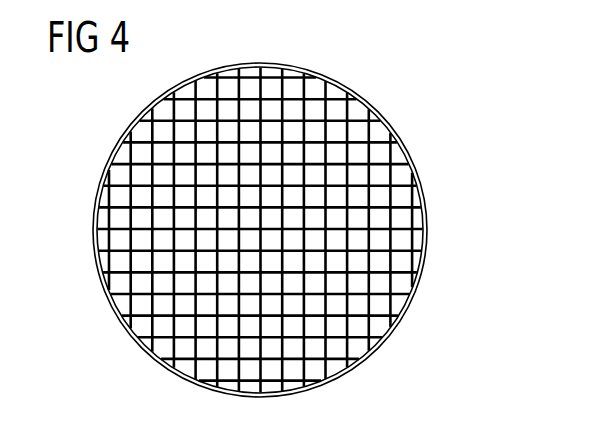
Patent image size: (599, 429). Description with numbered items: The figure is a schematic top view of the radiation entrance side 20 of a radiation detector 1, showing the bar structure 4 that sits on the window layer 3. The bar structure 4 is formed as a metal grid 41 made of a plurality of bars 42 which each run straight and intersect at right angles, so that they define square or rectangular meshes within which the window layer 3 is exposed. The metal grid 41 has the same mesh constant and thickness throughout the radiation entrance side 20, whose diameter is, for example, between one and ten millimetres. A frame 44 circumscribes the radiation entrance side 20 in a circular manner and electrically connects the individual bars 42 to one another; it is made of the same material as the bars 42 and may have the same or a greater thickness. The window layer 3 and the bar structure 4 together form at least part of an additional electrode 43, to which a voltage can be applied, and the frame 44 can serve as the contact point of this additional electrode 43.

The radiation detector 1 is at (432, 87).
The window layer 3 is at (375, 214).
The bar structure 4 is at (475, 118).
The radiation entrance side 20 is at (308, 295).
The metal grid 41 is at (357, 131).
The bars 42 is at (168, 282).
The additional electrode 43 is at (508, 122).
The frame 44 is at (408, 150).